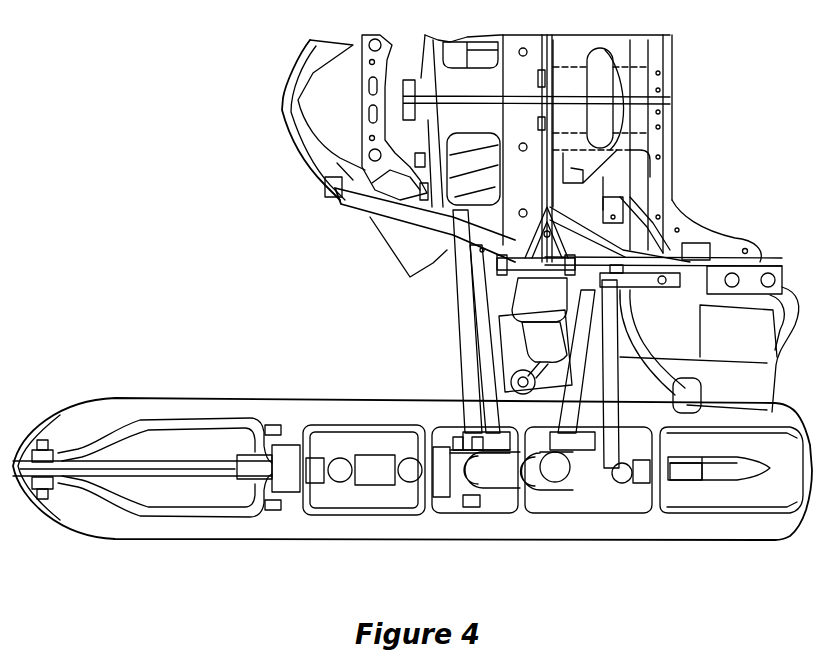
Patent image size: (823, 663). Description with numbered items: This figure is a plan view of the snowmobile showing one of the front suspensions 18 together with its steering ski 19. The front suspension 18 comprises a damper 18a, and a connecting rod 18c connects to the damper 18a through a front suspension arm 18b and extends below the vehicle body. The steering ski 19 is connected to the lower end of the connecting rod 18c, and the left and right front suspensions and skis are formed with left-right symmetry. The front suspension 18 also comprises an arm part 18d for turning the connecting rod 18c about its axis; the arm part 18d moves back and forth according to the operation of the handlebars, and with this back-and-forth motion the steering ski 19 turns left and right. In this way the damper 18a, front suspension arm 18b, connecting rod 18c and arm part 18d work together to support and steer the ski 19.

The front suspension 18 is at (398, 281).
The damper 18a is at (505, 317).
The front suspension arm 18b is at (462, 306).
The connecting rod 18c is at (502, 470).
The arm part 18d is at (631, 483).
The steering ski 19 is at (262, 400).